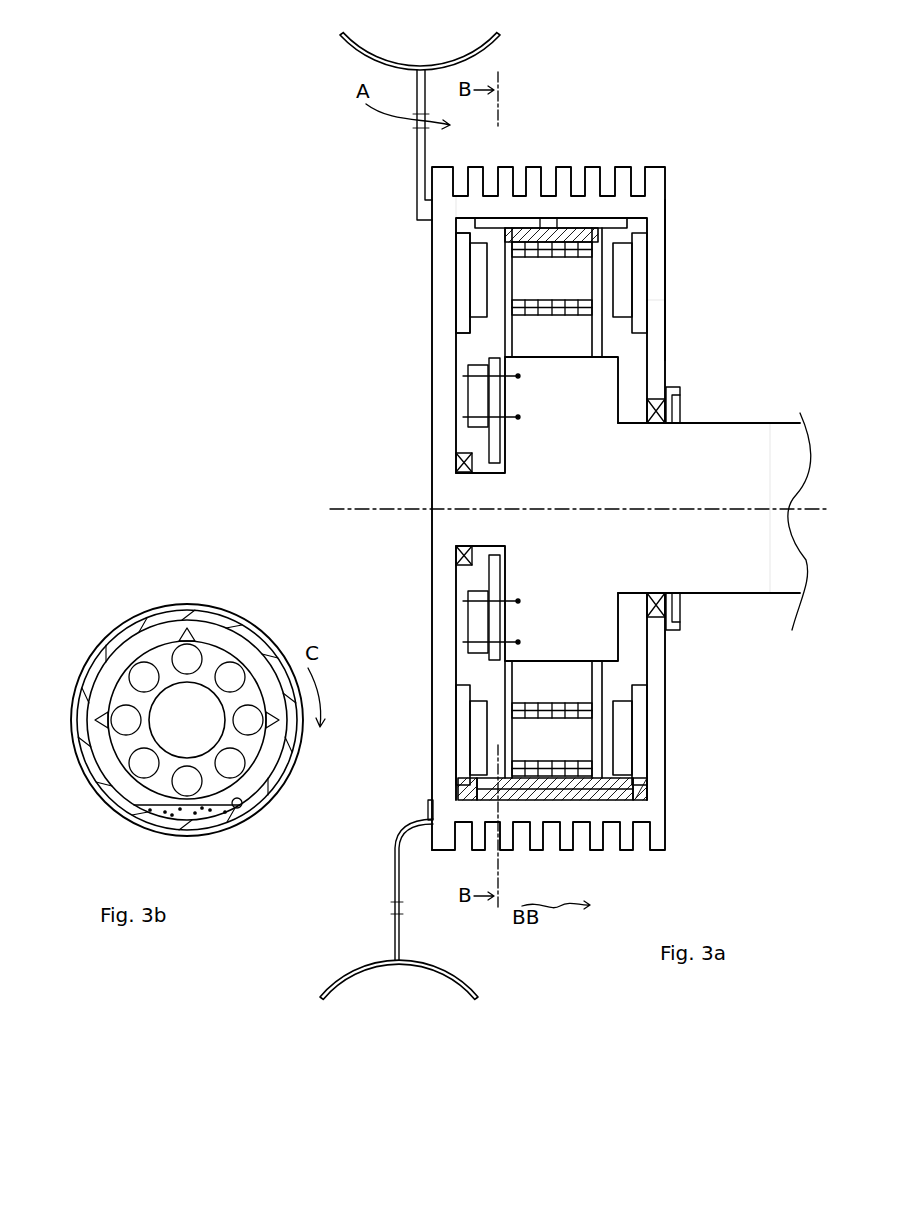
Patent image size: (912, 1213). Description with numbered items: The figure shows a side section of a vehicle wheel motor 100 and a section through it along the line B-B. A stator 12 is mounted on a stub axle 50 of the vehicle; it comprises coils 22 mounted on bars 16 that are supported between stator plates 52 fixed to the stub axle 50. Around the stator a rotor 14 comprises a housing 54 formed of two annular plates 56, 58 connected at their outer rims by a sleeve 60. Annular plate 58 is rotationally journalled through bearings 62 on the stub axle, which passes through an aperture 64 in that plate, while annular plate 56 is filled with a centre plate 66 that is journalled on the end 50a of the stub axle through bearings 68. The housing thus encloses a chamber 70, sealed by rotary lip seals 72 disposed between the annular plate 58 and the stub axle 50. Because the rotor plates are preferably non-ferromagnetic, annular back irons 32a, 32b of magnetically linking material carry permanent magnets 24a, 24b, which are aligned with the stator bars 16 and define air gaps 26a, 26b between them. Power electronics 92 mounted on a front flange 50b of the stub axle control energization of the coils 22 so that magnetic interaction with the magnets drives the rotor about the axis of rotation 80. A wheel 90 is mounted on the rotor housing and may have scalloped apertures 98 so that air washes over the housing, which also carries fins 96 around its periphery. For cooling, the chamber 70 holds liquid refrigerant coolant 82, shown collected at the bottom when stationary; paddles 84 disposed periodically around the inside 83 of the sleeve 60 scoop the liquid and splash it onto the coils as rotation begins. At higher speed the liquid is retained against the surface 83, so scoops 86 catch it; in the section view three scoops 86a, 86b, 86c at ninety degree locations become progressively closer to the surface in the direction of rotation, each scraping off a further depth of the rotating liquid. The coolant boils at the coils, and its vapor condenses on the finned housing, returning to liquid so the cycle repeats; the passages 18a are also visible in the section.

In FIG. 3a, the motor 100 is at (704, 88).
In FIG. 3a, the rotor 14 is at (693, 168).
In FIG. 3a, the housing 54 is at (658, 202).
In FIG. 3a, the sleeve 60 is at (502, 208).
In FIG. 3a, the annular plate 56 is at (436, 370).
In FIG. 3a, the bars 16 is at (452, 300).
In FIG. 3a, the permanent magnet 24a is at (463, 268).
In FIG. 3a, the permanent magnet 24b is at (624, 308).
In FIG. 3a, the annular back iron 32a is at (482, 274).
In FIG. 3a, the annular back iron 32b is at (640, 272).
In FIG. 3a, the annular plate 58 is at (656, 289).
In FIG. 3a, the air gap 26a is at (500, 300).
In FIG. 3a, the air gap 26b is at (610, 262).
In FIG. 3a, the fins 96 is at (545, 216).
In FIG. 3b, the fins 96 is at (264, 634).
In FIG. 3a, the paddles 84 is at (604, 236).
In FIG. 3a, the scoops 86 is at (596, 224).
In FIG. 3a, the inside of the sleeve 83 is at (650, 798).
In FIG. 3b, the inside of the sleeve 83 is at (240, 808).
In FIG. 3a, the liquid refrigerant coolant 82 is at (462, 790).
In FIG. 3b, the liquid refrigerant coolant 82 is at (162, 818).
In FIG. 3a, the coils 22 is at (518, 324).
In FIG. 3a, the stator 12 is at (618, 346).
In FIG. 3a, the stator plates 52 is at (570, 340).
In FIG. 3b, the stator plates 52 is at (120, 746).
In FIG. 3a, the end of the stub axle 50a is at (480, 525).
In FIG. 3a, the front flange 50b is at (498, 570).
In FIG. 3a, the chamber 70 is at (630, 406).
In FIG. 3a, the bearings 68 is at (470, 462).
In FIG. 3a, the centre plate 66 is at (434, 528).
In FIG. 3a, the power electronics 92 is at (478, 400).
In FIG. 3a, the bearings 62 is at (668, 414).
In FIG. 3a, the rotary lip seals 72 is at (680, 393).
In FIG. 3a, the aperture 64 is at (672, 610).
In FIG. 3a, the stub axle 50 is at (786, 466).
In FIG. 3a, the axis of rotation 80 is at (770, 512).
In FIG. 3a, the passage 18a is at (508, 262).
In FIG. 3b, the passage 18a is at (127, 717).
In FIG. 3a, the apertures 98 is at (394, 904).
In FIG. 3a, the wheel 90 is at (396, 934).
In FIG. 3b, the scoop 86a is at (95, 710).
In FIG. 3b, the scoop 86b is at (190, 640).
In FIG. 3b, the scoop 86c is at (280, 724).